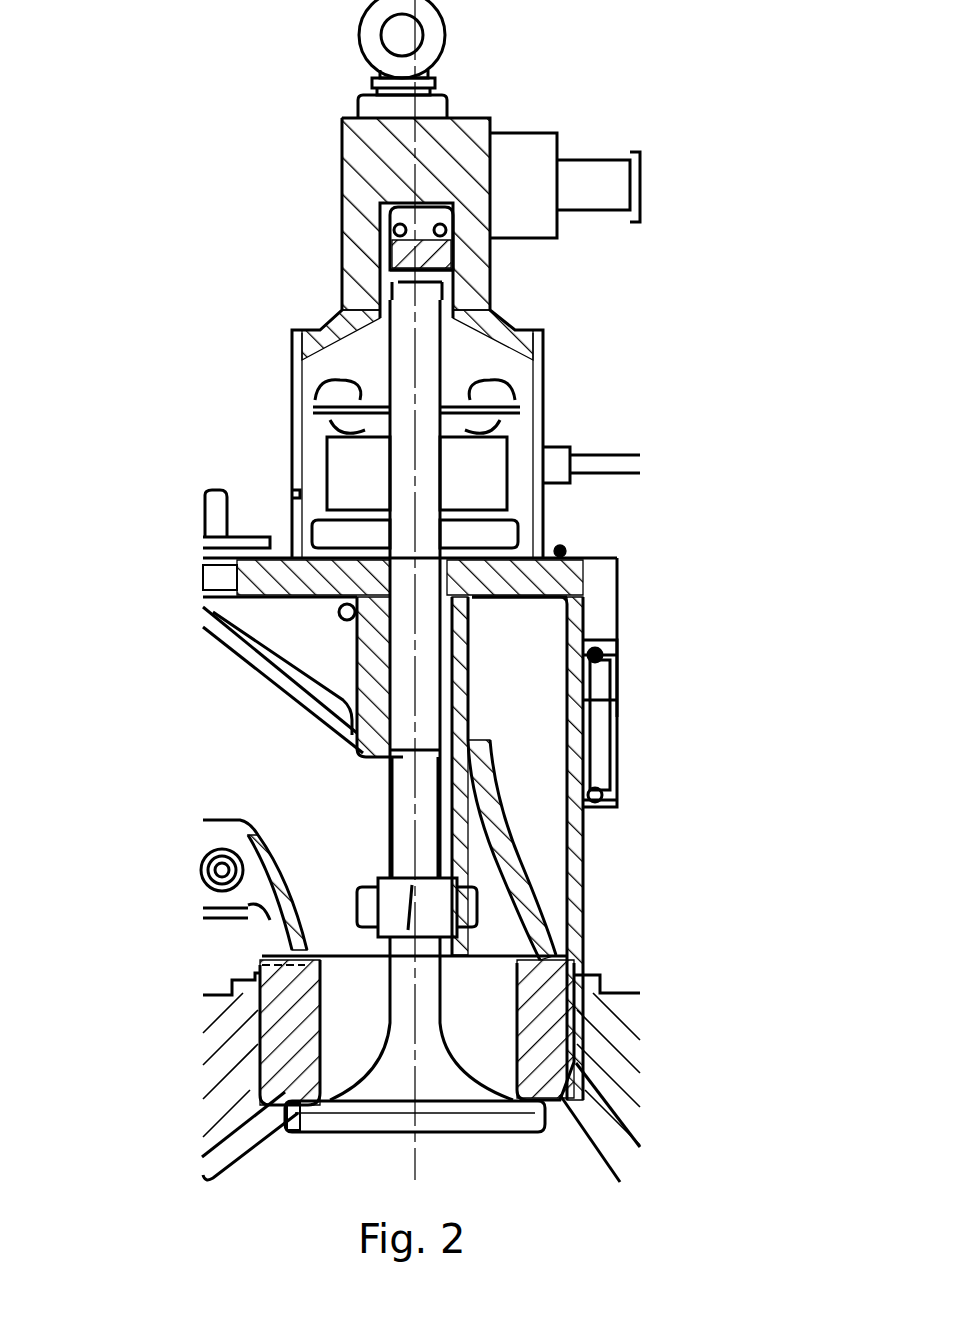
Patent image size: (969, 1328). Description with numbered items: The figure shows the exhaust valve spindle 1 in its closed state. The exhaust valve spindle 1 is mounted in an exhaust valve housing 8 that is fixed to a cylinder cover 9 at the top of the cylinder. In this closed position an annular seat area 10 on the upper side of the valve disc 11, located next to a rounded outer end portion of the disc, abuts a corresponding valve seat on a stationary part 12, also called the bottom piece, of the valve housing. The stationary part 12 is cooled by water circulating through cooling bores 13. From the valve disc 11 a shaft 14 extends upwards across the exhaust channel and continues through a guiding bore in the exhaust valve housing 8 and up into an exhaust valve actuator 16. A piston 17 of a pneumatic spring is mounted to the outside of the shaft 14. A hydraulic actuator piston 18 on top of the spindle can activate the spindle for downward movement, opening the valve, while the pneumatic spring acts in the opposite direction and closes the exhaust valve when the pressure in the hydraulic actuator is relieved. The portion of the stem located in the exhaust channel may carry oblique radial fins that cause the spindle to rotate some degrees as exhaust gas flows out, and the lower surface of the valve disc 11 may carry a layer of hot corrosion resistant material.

The exhaust valve spindle 1 is at (430, 830).
The exhaust valve housing 8 is at (567, 547).
The cylinder cover 9 is at (610, 1037).
The seat area 10 is at (453, 1107).
The valve disc 11 is at (313, 1120).
The stationary part 12 is at (573, 973).
The cooling bores 13 is at (607, 1100).
The shaft 14 is at (403, 788).
The exhaust valve actuator 16 is at (455, 160).
The piston 17 is at (477, 417).
The hydraulic actuator piston 18 is at (400, 250).